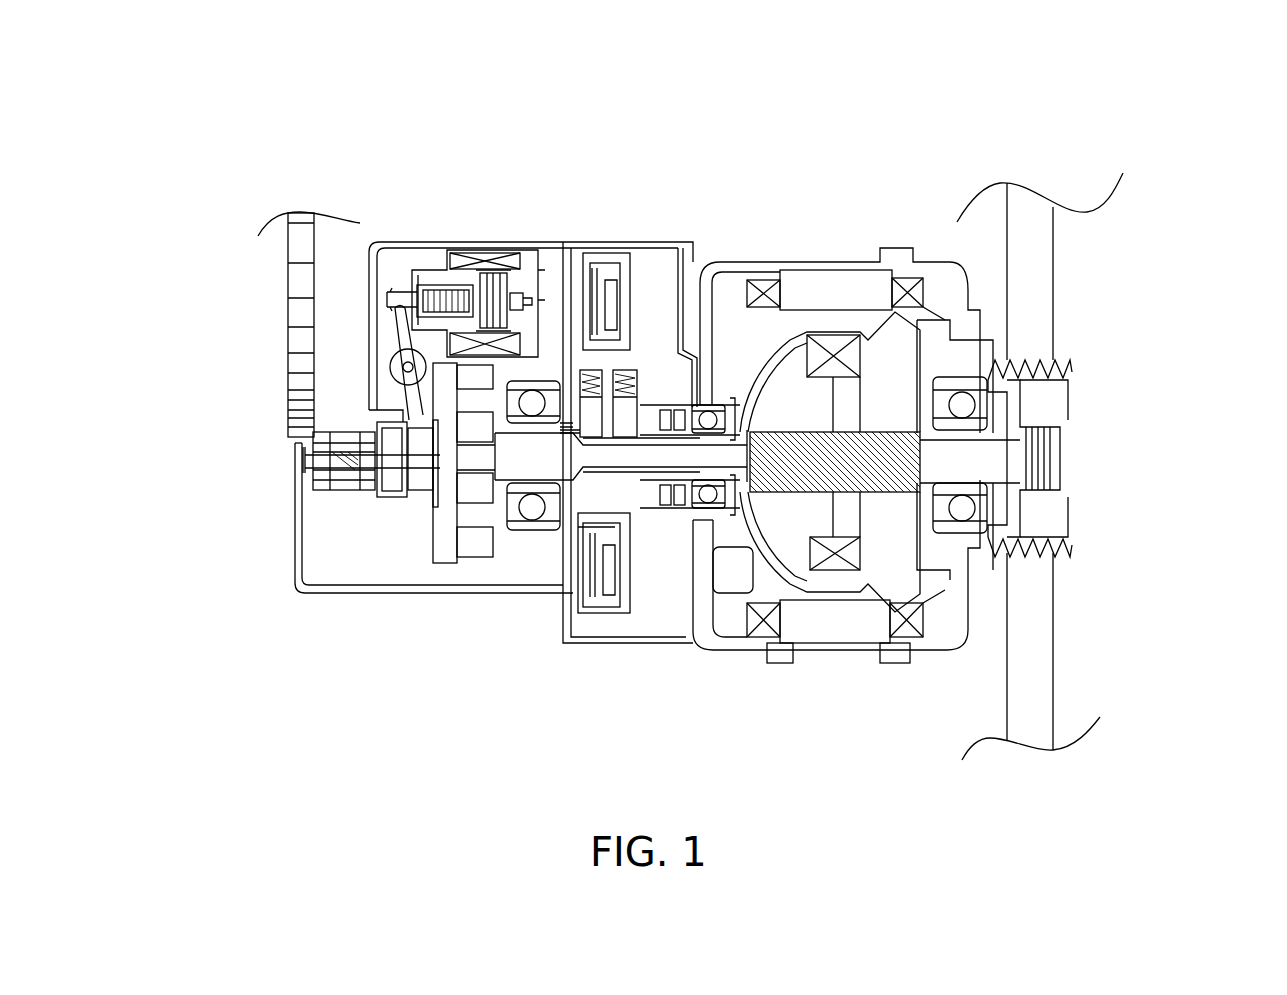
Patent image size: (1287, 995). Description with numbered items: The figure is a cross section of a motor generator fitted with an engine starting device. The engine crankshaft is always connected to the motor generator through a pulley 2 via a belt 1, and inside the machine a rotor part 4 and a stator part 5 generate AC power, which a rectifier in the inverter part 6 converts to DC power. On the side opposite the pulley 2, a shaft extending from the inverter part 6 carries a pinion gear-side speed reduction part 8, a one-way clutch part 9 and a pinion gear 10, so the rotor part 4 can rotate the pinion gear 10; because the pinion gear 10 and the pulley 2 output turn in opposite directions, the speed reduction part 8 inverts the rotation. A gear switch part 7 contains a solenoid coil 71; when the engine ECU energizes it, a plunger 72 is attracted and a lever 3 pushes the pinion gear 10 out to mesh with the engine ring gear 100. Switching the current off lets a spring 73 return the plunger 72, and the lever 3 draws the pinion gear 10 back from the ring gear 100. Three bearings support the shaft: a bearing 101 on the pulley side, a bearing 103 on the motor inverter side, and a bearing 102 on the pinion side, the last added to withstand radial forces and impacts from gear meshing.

The belt 1 is at (1010, 313).
The pulley 2 is at (1017, 510).
The lever 3 is at (405, 368).
The rotor part 4 is at (850, 610).
The stator part 5 is at (783, 547).
The inverter part 6 is at (610, 533).
The gear switch part 7 is at (445, 262).
The solenoid coil 71 is at (509, 268).
The plunger 72 is at (428, 280).
The spring 73 is at (507, 310).
The pinion gear-side speed reduction part 8 is at (462, 507).
The one-way clutch part 9 is at (397, 463).
The pinion gear 10 is at (348, 465).
The ring gear 100 is at (306, 263).
The bearing 101 is at (980, 527).
The bearing 102 is at (520, 527).
The bearing 103 is at (718, 410).